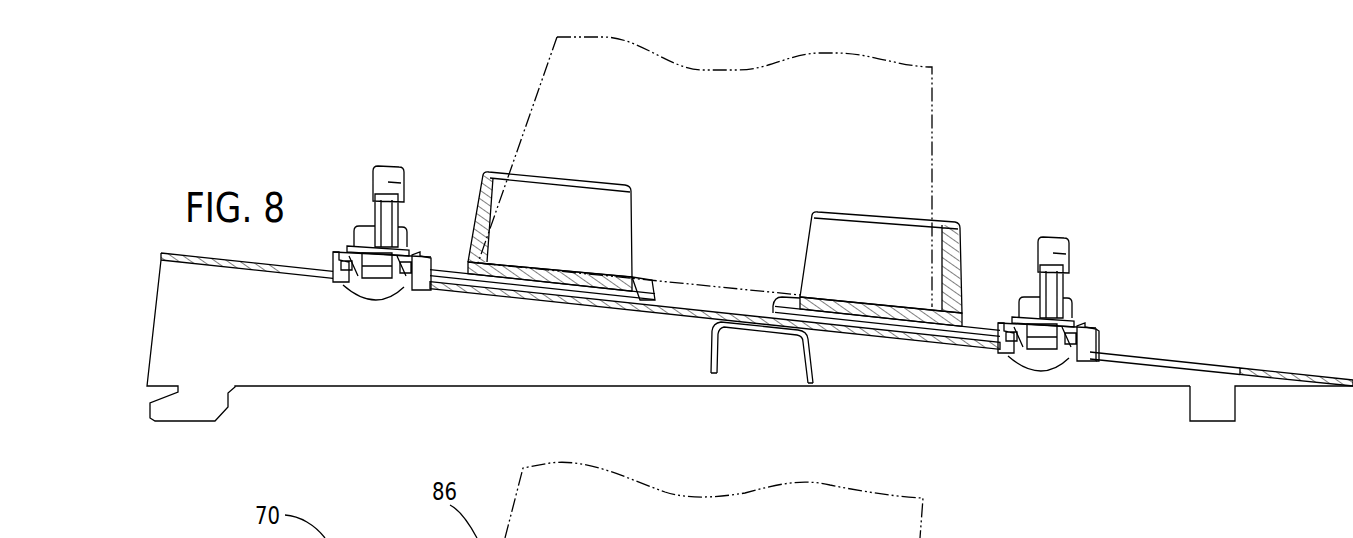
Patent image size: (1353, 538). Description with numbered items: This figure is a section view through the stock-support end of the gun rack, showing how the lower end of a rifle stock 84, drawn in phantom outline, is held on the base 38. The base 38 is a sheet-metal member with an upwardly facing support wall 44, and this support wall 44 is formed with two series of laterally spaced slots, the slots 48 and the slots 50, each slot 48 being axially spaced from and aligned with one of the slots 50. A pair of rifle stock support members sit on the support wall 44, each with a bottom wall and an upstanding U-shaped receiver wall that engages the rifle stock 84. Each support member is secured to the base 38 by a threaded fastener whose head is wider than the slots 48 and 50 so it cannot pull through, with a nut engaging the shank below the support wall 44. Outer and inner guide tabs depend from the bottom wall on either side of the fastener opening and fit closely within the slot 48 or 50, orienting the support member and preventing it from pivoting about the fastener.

The base 38 is at (1220, 277).
The support wall 44 is at (1297, 363).
The slot 48 is at (1162, 360).
The slot 50 is at (280, 273).
The rifle stock 84 is at (932, 115).